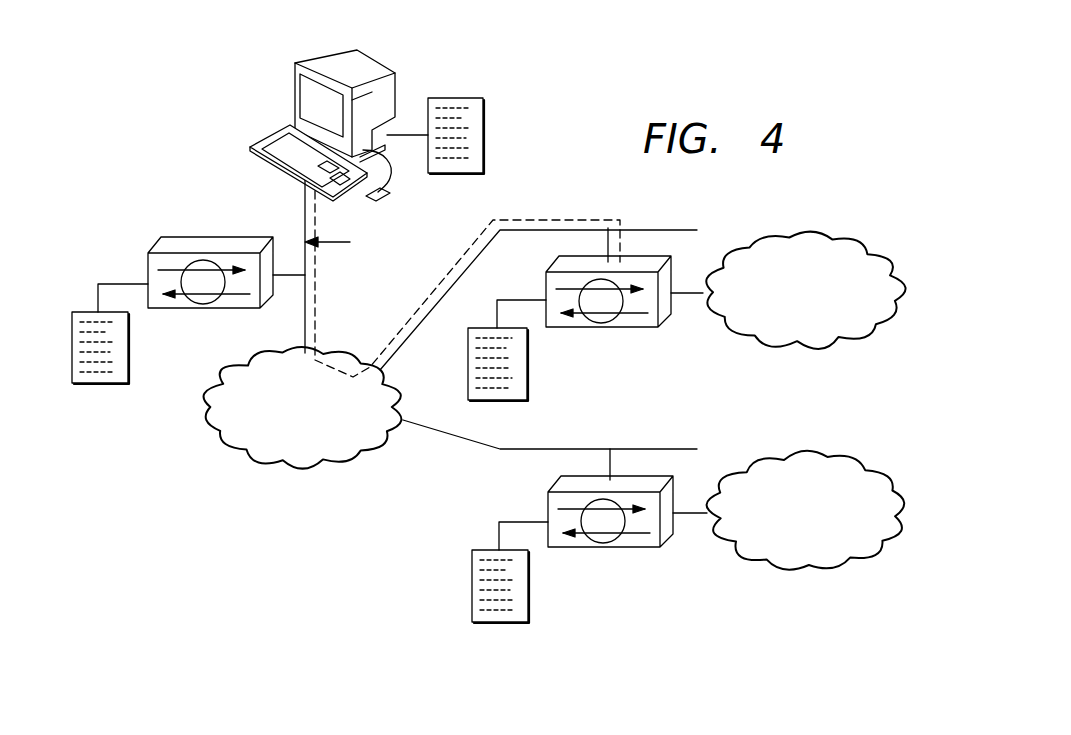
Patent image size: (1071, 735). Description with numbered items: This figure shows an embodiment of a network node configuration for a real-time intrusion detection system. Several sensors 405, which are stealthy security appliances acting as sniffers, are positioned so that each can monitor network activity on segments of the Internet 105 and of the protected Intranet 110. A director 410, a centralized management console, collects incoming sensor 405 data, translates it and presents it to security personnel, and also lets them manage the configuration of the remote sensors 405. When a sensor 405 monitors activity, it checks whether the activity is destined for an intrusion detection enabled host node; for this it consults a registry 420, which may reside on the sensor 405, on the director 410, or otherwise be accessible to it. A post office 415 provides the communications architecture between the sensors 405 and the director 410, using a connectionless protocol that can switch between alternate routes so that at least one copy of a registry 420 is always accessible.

The Internet 105 is at (218, 445).
The Intranet 110 is at (843, 237).
The sensor 405 is at (200, 237).
The director 410 is at (295, 97).
The post office 415 is at (375, 268).
The registry 420 is at (484, 104).